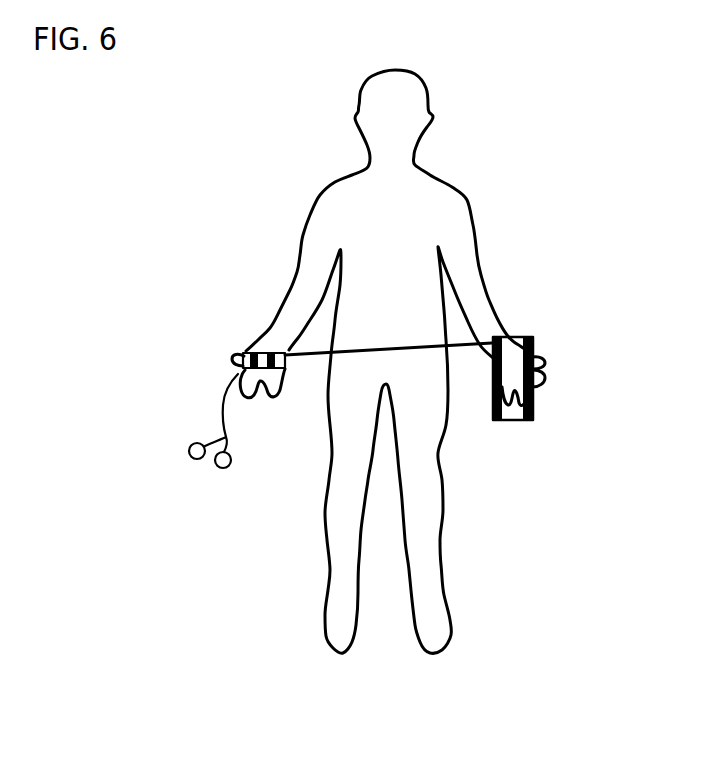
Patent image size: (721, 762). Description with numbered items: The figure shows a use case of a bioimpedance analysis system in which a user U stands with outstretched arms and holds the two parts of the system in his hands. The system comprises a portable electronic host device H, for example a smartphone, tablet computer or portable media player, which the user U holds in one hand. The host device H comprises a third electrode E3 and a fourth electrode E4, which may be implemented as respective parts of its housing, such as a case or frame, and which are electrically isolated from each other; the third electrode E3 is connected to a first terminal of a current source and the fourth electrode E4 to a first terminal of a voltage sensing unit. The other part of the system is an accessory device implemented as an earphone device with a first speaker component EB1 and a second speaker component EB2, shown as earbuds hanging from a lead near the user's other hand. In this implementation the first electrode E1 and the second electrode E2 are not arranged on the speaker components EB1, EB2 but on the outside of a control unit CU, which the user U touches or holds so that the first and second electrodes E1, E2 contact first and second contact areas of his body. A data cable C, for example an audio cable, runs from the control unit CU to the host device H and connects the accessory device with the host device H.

The user U is at (292, 267).
The control unit CU is at (287, 367).
The first electrode E1 is at (253, 350).
The second electrode E2 is at (272, 350).
The data cable C is at (385, 347).
The portable electronic host device H is at (533, 336).
The third electrode E3 is at (533, 412).
The fourth electrode E4 is at (493, 421).
The first speaker component EB1 is at (185, 458).
The second speaker component EB2 is at (228, 468).